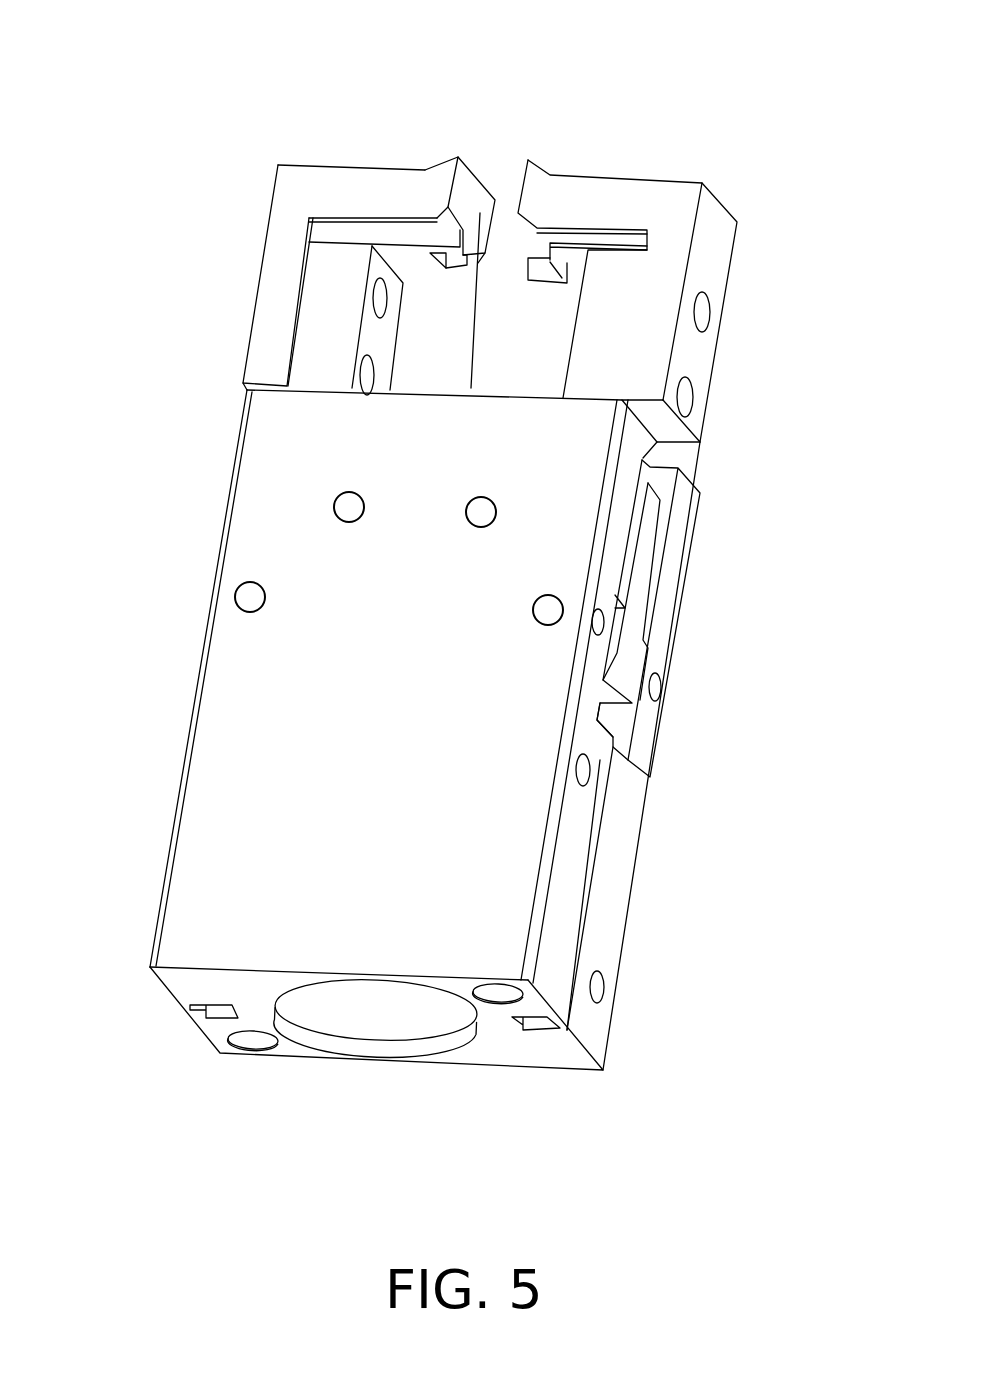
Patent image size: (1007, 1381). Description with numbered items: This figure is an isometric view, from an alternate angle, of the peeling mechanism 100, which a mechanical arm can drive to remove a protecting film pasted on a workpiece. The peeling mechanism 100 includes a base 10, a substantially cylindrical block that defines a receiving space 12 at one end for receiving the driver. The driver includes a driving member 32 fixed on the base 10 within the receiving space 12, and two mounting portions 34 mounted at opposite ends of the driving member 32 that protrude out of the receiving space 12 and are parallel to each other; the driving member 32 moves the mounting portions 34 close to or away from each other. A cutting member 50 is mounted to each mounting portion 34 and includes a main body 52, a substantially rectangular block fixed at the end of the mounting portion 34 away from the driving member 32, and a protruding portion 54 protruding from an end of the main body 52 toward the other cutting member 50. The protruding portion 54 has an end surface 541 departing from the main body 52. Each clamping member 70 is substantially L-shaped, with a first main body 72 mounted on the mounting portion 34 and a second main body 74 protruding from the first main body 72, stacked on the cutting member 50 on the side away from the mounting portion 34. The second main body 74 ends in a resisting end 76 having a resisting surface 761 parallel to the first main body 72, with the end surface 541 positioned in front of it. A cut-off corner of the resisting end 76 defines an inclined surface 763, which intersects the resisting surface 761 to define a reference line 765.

The peeling mechanism 100 is at (166, 230).
The base 10 is at (290, 823).
The receiving space 12 is at (604, 721).
The driving member 32 is at (632, 653).
The mounting portion 34 is at (607, 323).
The cutting member 50 is at (139, 295).
The main body 52 is at (447, 242).
The protruding portion 54 is at (397, 255).
The end surface 541 is at (480, 213).
The clamping member 70 is at (385, 40).
The first main body 72 is at (281, 248).
The second main body 74 is at (340, 188).
The resisting end 76 is at (445, 170).
The resisting surface 761 is at (460, 192).
The inclined surface 763 is at (430, 258).
The reference line 765 is at (478, 263).